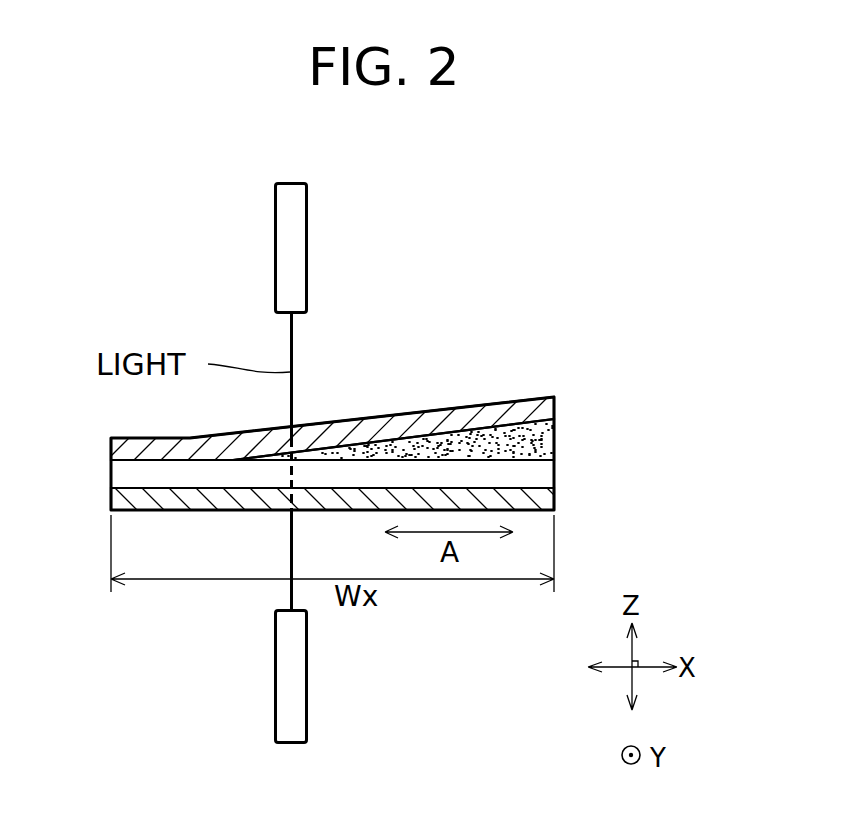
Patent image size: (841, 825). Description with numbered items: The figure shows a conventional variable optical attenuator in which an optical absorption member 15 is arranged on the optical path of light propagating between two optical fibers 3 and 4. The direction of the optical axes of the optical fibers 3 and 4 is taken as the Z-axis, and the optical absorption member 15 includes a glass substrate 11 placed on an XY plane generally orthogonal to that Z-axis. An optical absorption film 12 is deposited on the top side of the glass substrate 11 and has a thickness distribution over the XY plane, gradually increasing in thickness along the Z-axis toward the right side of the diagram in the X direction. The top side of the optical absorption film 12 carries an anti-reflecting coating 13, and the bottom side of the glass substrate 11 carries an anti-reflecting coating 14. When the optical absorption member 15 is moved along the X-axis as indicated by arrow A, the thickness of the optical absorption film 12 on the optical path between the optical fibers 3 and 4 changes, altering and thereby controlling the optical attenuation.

The optical fiber 3 is at (292, 233).
The optical fiber 4 is at (292, 682).
The glass substrate 11 is at (540, 475).
The optical absorption film 12 is at (495, 438).
The anti-reflecting coating 13 is at (420, 428).
The anti-reflecting coating 14 is at (540, 500).
The optical absorption member 15 is at (570, 416).